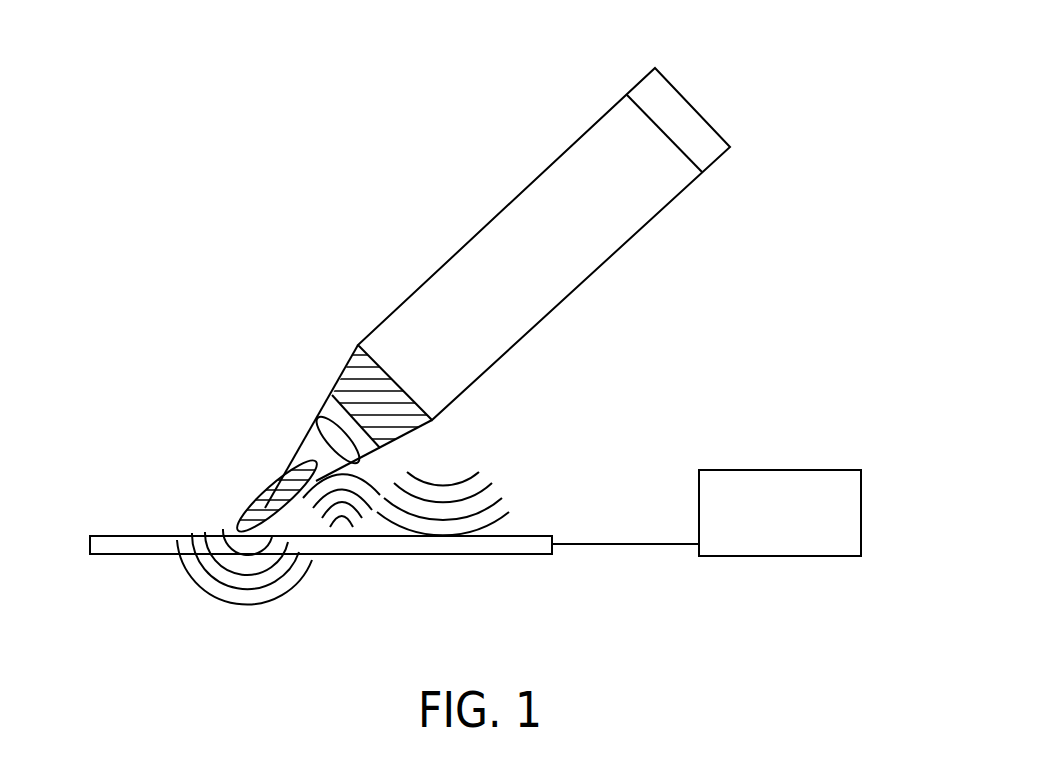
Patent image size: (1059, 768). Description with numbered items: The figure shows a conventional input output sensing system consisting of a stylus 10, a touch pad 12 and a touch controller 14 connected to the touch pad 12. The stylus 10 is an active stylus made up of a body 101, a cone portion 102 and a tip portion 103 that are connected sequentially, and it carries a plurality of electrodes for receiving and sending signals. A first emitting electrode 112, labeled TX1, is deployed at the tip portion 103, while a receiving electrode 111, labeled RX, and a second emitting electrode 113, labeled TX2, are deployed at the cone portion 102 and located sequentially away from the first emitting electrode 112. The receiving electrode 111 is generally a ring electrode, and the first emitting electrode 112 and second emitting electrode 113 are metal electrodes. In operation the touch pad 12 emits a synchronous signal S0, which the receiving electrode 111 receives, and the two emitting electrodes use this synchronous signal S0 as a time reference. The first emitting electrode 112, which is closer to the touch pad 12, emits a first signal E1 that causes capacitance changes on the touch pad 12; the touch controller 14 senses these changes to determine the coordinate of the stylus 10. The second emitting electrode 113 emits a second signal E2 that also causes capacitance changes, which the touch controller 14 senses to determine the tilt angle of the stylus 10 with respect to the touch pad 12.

The stylus 10 is at (427, 285).
The body 101 is at (615, 220).
The cone portion 102 is at (330, 396).
The tip portion 103 is at (272, 484).
The receiving electrode 111 is at (317, 432).
The first emitting electrode 112 is at (245, 512).
The second emitting electrode 113 is at (352, 370).
The touch pad 12 is at (88, 548).
The touch controller 14 is at (860, 485).
The first signal E1 is at (197, 582).
The second signal E2 is at (483, 525).
The synchronous signal S0 is at (342, 514).